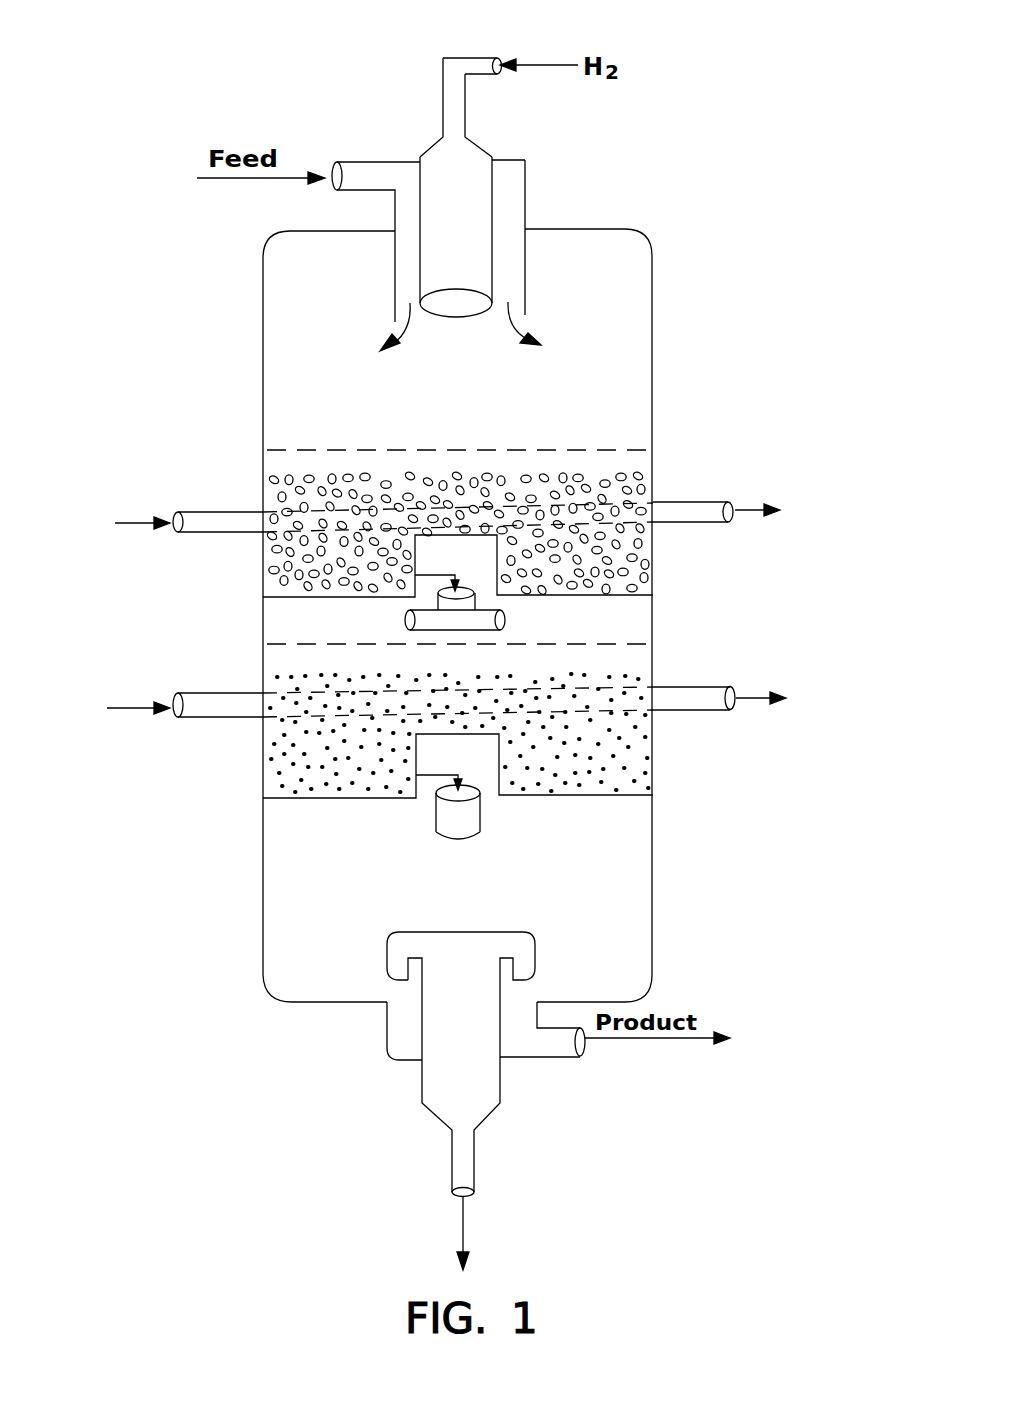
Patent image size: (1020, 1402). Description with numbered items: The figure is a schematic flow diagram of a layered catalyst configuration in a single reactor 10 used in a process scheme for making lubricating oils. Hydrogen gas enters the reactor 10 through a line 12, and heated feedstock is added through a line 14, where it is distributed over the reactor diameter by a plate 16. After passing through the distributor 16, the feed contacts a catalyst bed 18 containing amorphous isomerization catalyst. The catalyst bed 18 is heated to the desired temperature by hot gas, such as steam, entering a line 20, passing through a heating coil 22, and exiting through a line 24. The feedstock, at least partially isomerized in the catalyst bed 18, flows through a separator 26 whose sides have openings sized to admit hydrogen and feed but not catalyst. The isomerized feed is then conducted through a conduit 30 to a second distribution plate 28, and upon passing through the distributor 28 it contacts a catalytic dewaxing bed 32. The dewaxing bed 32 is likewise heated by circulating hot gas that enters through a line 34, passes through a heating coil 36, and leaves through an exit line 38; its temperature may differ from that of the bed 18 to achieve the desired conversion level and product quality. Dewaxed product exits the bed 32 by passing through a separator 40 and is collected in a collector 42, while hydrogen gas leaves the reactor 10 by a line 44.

The reactor 10 is at (263, 335).
The line 12 is at (477, 58).
The line 14 is at (370, 162).
The plate 16 is at (600, 446).
The catalyst bed 18 is at (280, 490).
The line 20 is at (218, 532).
The heating coil 22 is at (613, 490).
The line 24 is at (700, 523).
The separator 26 is at (498, 577).
The second distribution plate 28 is at (600, 642).
The conduit 30 is at (413, 604).
The catalytic dewaxing bed 32 is at (627, 750).
The line 34 is at (203, 692).
The heating coil 36 is at (612, 686).
The exit line 38 is at (723, 687).
The separator 40 is at (416, 762).
The collector 42 is at (387, 1033).
The line 44 is at (474, 1148).